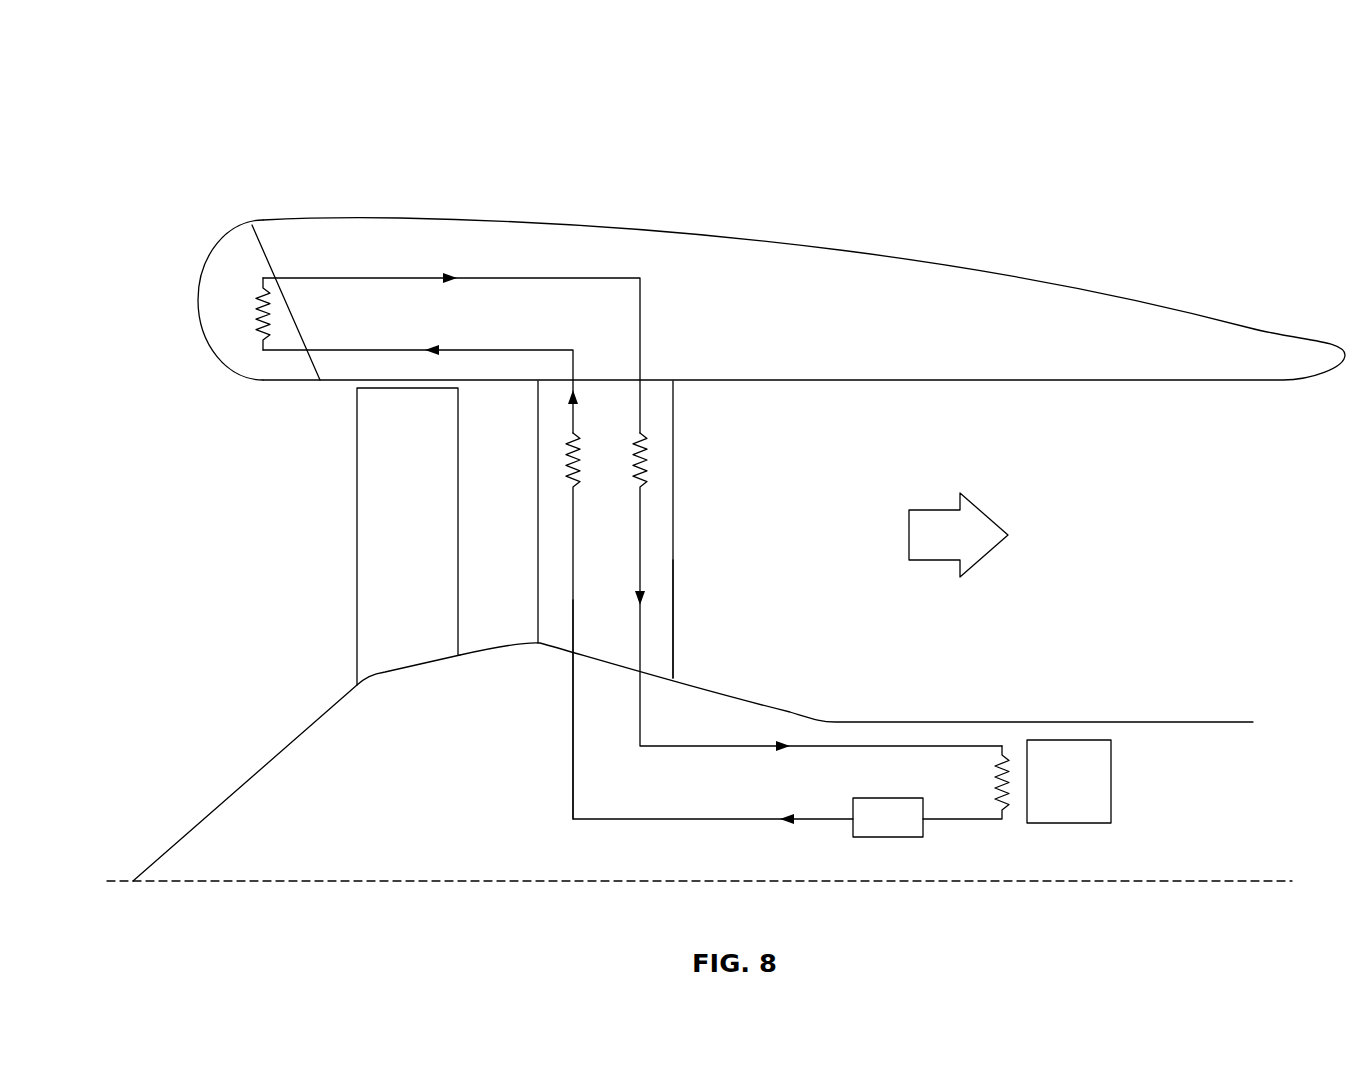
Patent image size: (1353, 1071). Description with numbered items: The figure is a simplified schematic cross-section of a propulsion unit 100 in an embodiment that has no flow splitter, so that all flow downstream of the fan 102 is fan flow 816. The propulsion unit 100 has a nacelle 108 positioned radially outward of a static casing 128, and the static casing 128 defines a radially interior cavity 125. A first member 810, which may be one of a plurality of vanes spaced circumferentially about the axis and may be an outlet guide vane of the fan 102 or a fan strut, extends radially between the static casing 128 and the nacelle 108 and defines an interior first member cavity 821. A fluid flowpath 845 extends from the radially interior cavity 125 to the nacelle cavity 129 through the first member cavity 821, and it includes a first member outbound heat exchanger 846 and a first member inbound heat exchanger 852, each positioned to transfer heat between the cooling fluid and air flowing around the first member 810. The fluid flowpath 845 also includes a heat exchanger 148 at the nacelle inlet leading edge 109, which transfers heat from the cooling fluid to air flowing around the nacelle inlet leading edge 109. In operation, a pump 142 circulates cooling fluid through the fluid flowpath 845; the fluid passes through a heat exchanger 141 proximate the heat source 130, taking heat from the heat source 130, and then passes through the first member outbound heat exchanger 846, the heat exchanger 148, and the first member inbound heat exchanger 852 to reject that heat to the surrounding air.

The propulsion unit 100 is at (150, 93).
The nacelle 108 is at (278, 220).
The nacelle inlet leading edge 109 is at (186, 302).
The heat exchanger 148 is at (243, 336).
The nacelle cavity 129 is at (1168, 338).
The fan 102 is at (431, 548).
The radially interior cavity 125 is at (455, 840).
The static casing 128 is at (782, 707).
The first member 810 is at (675, 413).
The first member cavity 821 is at (667, 638).
The first member outbound heat exchanger 846 is at (556, 463).
The first member inbound heat exchanger 852 is at (662, 462).
The fluid flowpath 845 is at (570, 735).
The fan flow 816 is at (961, 548).
The heat exchanger 141 is at (972, 780).
The pump 142 is at (911, 833).
The heat source 130 is at (1093, 795).